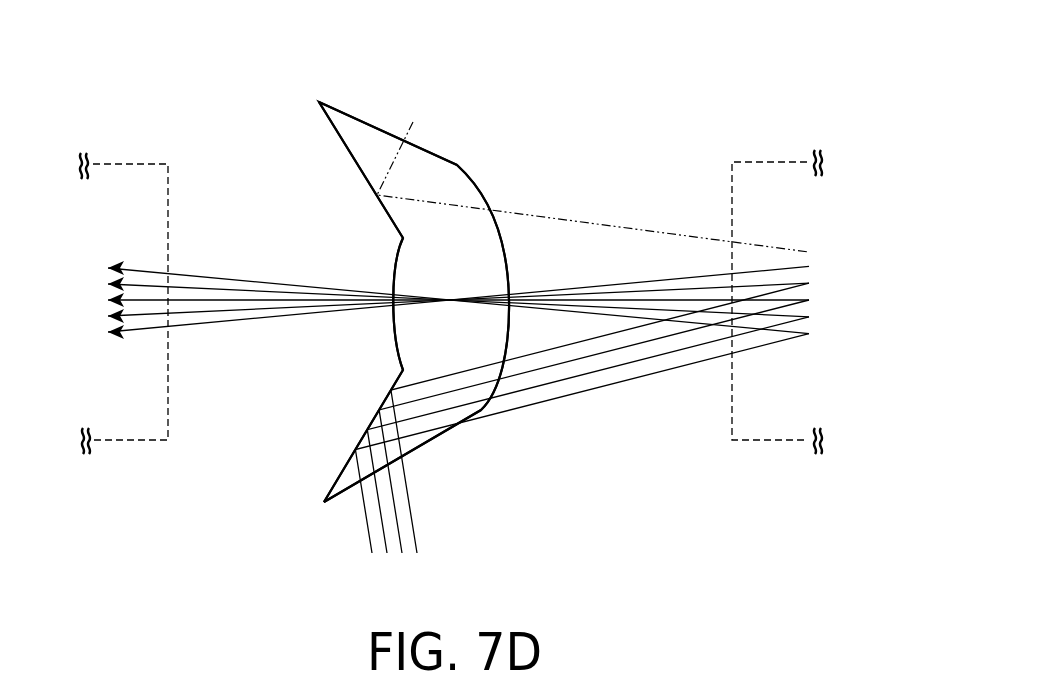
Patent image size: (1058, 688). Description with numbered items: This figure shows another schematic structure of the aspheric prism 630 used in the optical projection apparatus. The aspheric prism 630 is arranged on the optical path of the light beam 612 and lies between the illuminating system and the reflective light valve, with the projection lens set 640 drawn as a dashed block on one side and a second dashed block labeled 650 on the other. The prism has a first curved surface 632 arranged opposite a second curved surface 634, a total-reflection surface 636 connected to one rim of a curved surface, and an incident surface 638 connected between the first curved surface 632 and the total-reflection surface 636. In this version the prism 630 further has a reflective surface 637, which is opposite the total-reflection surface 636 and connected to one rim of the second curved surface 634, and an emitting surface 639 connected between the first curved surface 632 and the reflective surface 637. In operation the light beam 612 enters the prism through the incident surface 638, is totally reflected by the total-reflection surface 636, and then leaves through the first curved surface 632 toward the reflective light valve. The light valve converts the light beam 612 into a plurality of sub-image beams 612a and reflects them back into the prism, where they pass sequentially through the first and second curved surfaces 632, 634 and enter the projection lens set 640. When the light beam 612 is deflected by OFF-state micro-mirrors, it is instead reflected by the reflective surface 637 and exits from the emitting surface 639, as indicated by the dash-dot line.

The light beam 612 is at (383, 535).
The sub-image beams 612a is at (217, 303).
The aspheric prism 630 is at (448, 172).
The first curved surface 632 is at (504, 247).
The second curved surface 634 is at (393, 272).
The total-reflection surface 636 is at (360, 446).
The reflective surface 637 is at (346, 148).
The incident surface 638 is at (432, 452).
The emitting surface 639 is at (372, 122).
The projection lens set 640 is at (130, 162).
The second optical element 650 is at (771, 160).